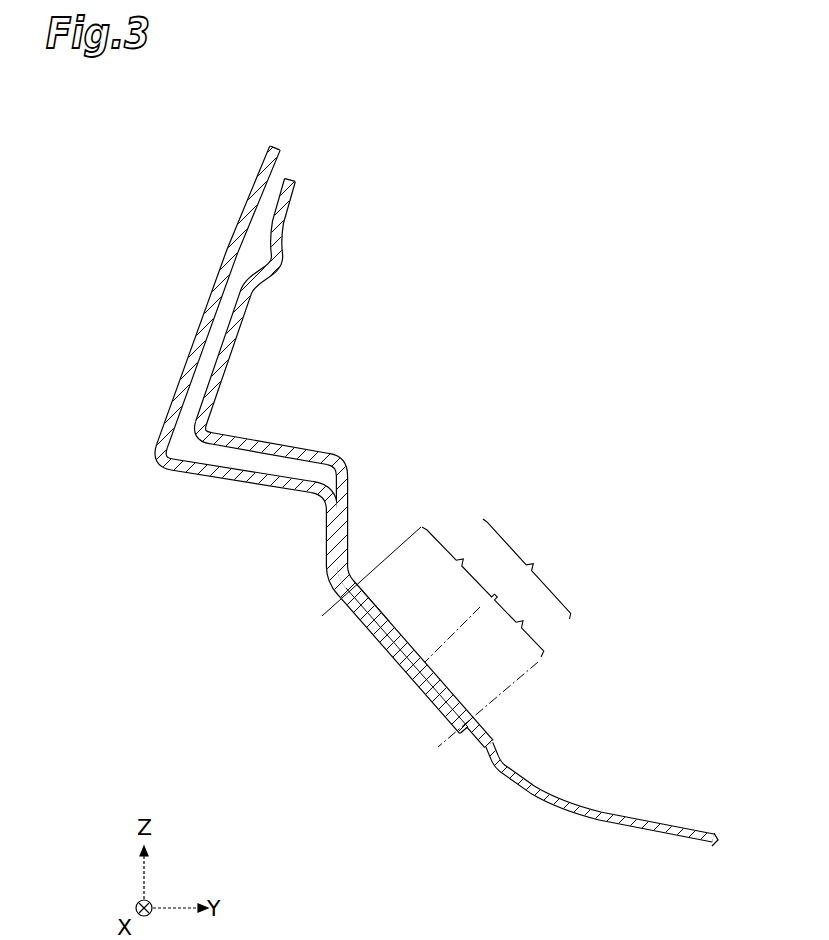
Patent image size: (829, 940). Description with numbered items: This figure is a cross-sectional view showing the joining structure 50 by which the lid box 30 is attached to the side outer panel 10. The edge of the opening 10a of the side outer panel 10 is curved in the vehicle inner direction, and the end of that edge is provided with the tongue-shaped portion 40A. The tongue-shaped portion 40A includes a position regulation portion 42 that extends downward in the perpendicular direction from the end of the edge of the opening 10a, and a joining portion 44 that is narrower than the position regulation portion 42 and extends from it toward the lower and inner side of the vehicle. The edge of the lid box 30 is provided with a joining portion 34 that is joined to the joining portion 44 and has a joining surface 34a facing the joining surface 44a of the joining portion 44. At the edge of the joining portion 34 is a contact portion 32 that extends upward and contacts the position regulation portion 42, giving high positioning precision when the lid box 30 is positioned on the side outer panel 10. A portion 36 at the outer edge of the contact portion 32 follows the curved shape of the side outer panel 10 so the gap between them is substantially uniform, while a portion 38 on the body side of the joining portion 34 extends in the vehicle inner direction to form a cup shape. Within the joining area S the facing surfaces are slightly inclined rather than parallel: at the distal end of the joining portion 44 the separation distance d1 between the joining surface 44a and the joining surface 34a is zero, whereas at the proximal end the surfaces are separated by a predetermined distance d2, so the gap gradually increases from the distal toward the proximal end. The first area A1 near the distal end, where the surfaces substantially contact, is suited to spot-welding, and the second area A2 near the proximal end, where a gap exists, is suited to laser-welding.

The side outer panel 10 is at (208, 306).
The opening 10a is at (210, 475).
The lid box 30 is at (233, 343).
The contact portion 32 is at (348, 515).
The joining portion 34 is at (446, 692).
The joining surface 34a is at (373, 621).
The portion at the outer edge of the contact portion 36 is at (273, 442).
The portion at the side of the body of the joining portion 38 is at (632, 818).
The tongue-shaped portion 40A is at (330, 588).
The position regulation portion 42 is at (327, 539).
The joining portion 44 is at (386, 661).
The joining surface 44a is at (434, 690).
The joining structure 50 is at (620, 299).
The separation distance d1 is at (487, 718).
The predetermined distance d2 is at (368, 585).
The first area A1 is at (523, 626).
The second area A2 is at (461, 594).
The joining area S is at (527, 569).